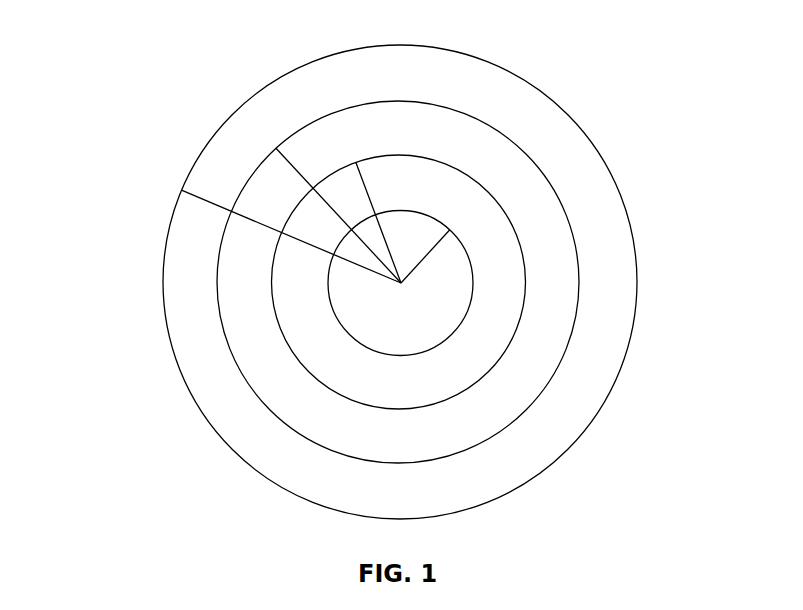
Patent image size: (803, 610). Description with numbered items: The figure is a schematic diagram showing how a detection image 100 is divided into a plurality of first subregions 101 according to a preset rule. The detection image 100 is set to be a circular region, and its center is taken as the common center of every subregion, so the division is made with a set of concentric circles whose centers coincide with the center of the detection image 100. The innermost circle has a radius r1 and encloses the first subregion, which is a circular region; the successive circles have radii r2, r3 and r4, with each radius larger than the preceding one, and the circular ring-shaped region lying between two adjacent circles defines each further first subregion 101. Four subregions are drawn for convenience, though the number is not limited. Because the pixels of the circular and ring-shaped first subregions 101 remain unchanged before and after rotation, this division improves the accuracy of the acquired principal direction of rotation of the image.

The detection image 100 is at (170, 152).
The first subregions 101 is at (563, 150).
The radius of the first concentric circle r1 is at (425, 254).
The radius of the second concentric circle r2 is at (373, 222).
The radius of the third concentric circle r3 is at (338, 215).
The radius of the fourth concentric circle r4 is at (292, 236).